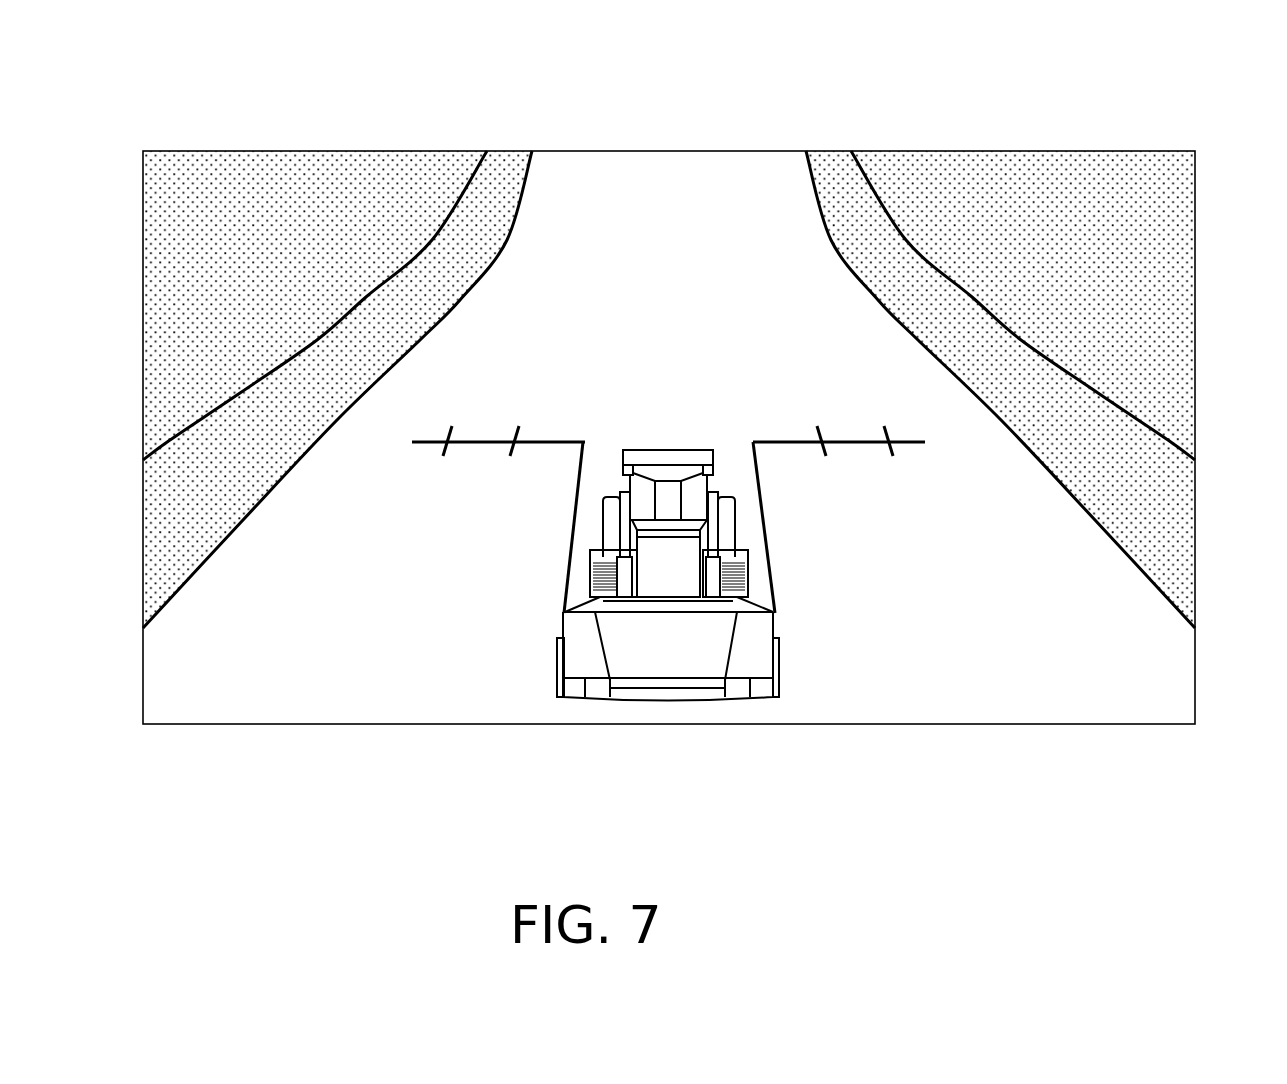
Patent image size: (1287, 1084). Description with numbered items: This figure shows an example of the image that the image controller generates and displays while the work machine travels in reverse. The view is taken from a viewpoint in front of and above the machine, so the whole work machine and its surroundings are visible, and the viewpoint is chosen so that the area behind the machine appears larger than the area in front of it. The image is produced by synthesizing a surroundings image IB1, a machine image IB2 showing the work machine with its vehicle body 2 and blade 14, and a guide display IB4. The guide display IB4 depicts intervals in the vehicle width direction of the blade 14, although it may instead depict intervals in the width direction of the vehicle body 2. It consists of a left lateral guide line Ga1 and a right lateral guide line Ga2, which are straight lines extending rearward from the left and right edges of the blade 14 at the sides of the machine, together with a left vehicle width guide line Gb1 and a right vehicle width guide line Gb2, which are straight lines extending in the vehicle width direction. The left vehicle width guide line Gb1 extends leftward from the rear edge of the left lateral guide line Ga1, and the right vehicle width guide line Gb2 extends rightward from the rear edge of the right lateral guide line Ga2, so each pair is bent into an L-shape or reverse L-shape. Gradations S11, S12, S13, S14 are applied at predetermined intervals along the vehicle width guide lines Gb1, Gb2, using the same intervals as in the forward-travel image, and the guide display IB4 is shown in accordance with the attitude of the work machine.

The vehicle body 2 is at (668, 455).
The blade 14 is at (632, 653).
The surroundings image IB1 is at (662, 335).
The machine image IB2 is at (693, 715).
The guide display IB4 is at (950, 433).
The left vehicle width guide line Gb1 is at (853, 440).
The right vehicle width guide line Gb2 is at (482, 440).
The left lateral guide line Ga1 is at (768, 528).
The right lateral guide line Ga2 is at (573, 527).
The gradation S11 is at (826, 453).
The gradation S12 is at (893, 453).
The gradation S13 is at (488, 443).
The gradation S14 is at (450, 443).